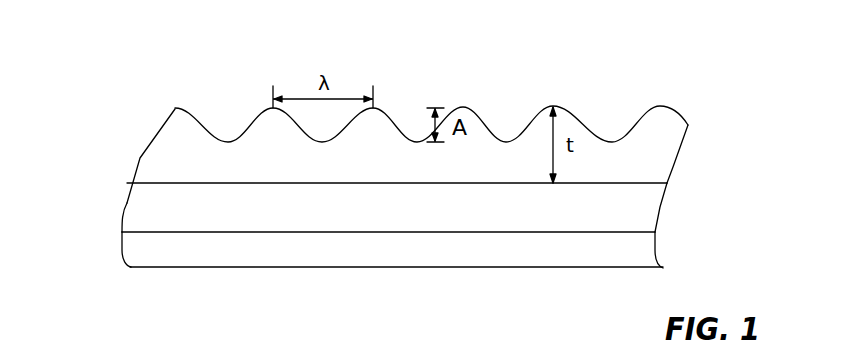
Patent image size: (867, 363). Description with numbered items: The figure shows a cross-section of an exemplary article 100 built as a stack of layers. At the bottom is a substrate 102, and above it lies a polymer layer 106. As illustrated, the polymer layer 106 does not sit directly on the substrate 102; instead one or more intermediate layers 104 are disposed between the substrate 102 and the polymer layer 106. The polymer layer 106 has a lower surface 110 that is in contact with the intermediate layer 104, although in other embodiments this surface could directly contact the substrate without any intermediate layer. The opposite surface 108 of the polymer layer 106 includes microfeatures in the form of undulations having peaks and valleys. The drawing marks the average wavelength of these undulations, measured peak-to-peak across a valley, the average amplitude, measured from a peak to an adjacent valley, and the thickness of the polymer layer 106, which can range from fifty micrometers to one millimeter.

The article 100 is at (246, 46).
The substrate 102 is at (647, 250).
The intermediate layer 104 is at (643, 200).
The polymer layer 106 is at (670, 145).
The opposite surface 108 is at (175, 108).
The surface 110 is at (163, 184).